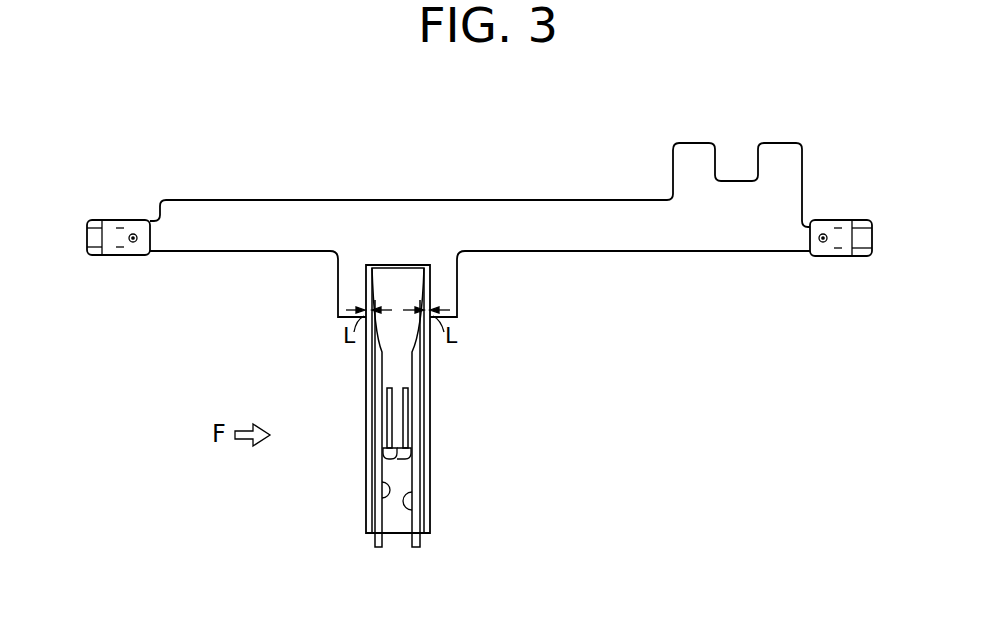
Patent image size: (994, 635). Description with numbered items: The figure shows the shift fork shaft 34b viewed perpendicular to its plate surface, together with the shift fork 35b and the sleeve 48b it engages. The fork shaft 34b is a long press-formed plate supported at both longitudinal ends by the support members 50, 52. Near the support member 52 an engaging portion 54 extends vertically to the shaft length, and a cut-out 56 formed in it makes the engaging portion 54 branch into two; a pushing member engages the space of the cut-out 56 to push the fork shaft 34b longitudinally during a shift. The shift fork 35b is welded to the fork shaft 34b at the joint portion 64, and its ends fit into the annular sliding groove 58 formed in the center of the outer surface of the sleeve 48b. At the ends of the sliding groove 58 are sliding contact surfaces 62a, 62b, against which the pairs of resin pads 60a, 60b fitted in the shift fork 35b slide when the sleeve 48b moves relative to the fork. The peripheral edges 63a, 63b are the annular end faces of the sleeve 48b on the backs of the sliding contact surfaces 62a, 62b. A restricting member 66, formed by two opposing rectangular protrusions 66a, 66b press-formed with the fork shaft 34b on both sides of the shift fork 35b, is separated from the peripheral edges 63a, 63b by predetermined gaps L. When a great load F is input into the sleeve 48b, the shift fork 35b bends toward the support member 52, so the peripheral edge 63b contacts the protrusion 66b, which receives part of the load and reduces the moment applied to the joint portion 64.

The shift fork shaft 34b is at (230, 180).
The engaging portion 54 is at (660, 166).
The cut-out 56 is at (757, 163).
The support member 50 is at (113, 242).
The support member 52 is at (852, 240).
The joint portion 64 is at (400, 252).
The restricting member 66 is at (480, 301).
The protrusion 66a is at (352, 288).
The protrusion 66b is at (443, 287).
The shift fork 35b is at (433, 378).
The sleeve 48b is at (436, 447).
The peripheral edge 63a is at (375, 465).
The peripheral edge 63b is at (422, 473).
The resin pads 60a is at (387, 413).
The resin pads 60b is at (409, 417).
The sliding contact surface 62a is at (390, 494).
The sliding contact surface 62b is at (406, 501).
The sliding groove 58 is at (396, 534).